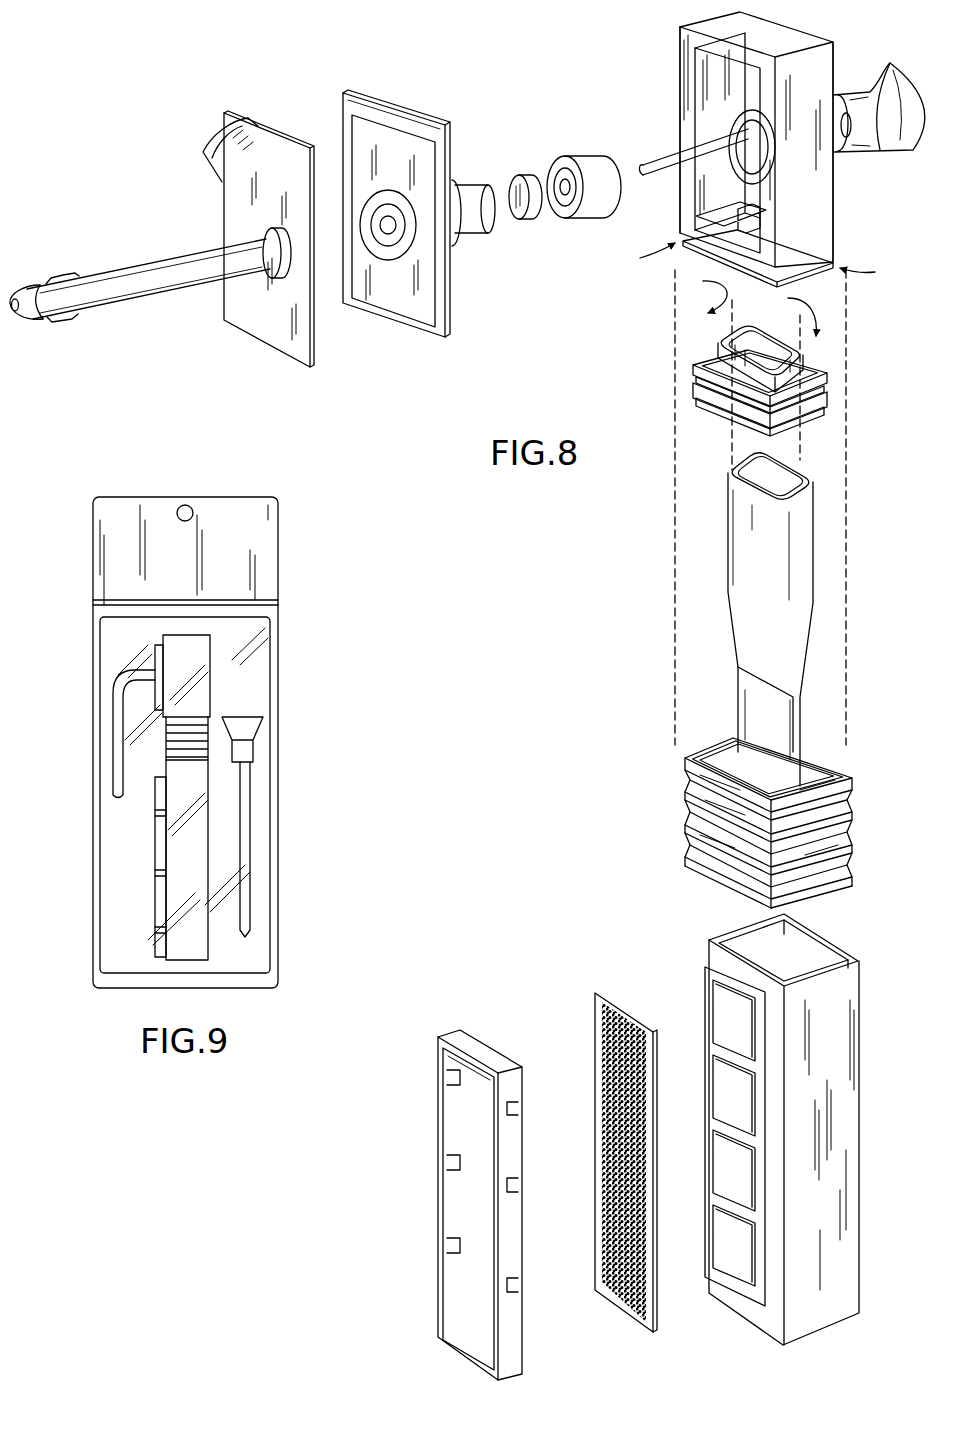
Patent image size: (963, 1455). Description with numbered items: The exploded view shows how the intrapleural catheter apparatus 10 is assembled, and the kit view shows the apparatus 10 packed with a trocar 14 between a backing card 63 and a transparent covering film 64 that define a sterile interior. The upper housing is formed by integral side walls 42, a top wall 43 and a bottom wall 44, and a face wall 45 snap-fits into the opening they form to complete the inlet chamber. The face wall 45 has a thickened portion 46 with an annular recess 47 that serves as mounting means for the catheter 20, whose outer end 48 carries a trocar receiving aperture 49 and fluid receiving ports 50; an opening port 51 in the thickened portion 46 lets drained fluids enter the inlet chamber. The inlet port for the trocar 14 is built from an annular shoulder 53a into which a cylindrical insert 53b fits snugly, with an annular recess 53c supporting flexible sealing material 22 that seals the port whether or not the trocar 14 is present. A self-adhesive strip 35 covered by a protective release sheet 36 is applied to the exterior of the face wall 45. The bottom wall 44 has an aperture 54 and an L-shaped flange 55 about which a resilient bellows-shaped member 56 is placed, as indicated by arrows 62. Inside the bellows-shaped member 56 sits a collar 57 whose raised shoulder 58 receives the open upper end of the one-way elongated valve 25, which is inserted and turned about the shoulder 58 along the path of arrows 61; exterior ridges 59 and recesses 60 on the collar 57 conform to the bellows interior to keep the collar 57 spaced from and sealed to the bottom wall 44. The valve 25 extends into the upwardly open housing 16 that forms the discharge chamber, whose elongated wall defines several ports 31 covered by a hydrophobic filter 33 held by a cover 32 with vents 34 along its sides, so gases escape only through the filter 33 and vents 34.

In FIG. 9, the intrapleural catheter apparatus 10 is at (212, 680).
In FIG. 9, the trocar 14 is at (250, 840).
In FIG. 8, the housing 16 is at (859, 987).
In FIG. 8, the catheter 20 is at (162, 260).
In FIG. 8, the sealing material 22 is at (519, 176).
In FIG. 8, the one-way elongated valve 25 is at (817, 560).
In FIG. 8, the ports 31 is at (705, 990).
In FIG. 8, the cover 32 is at (480, 1040).
In FIG. 8, the hydrophobic filter 33 is at (617, 1313).
In FIG. 8, the vents 34 is at (518, 1106).
In FIG. 8, the self-adhesive strip 35 is at (248, 122).
In FIG. 8, the protective release sheet 36 is at (208, 150).
In FIG. 8, the side walls 42 is at (729, 87).
In FIG. 8, the top wall 43 is at (805, 34).
In FIG. 8, the bottom wall 44 is at (836, 260).
In FIG. 8, the face wall 45 is at (397, 110).
In FIG. 8, the thickened portion 46 is at (453, 185).
In FIG. 8, the annular recess 47 is at (402, 256).
In FIG. 8, the outer end 48 is at (33, 286).
In FIG. 8, the trocar receiving aperture 49 is at (17, 311).
In FIG. 8, the fluid receiving ports 50 is at (56, 281).
In FIG. 8, the opening port 51 is at (458, 246).
In FIG. 8, the annular shoulder 53a is at (760, 180).
In FIG. 8, the cylindrical insert 53b is at (590, 158).
In FIG. 8, the annular recess 53c is at (552, 165).
In FIG. 8, the aperture 54 is at (700, 212).
In FIG. 8, the L-shaped flange 55 is at (802, 368).
In FIG. 8, the bellows-shaped member 56 is at (835, 770).
In FIG. 8, the collar 57 is at (827, 372).
In FIG. 8, the raised shoulder 58 is at (800, 347).
In FIG. 8, the ridges 59 is at (830, 405).
In FIG. 8, the recesses 60 is at (830, 388).
In FIG. 8, the arrows 61 is at (750, 304).
In FIG. 8, the arrows 62 is at (760, 265).
In FIG. 9, the backing card 63 is at (278, 535).
In FIG. 9, the transparent covering film 64 is at (270, 622).